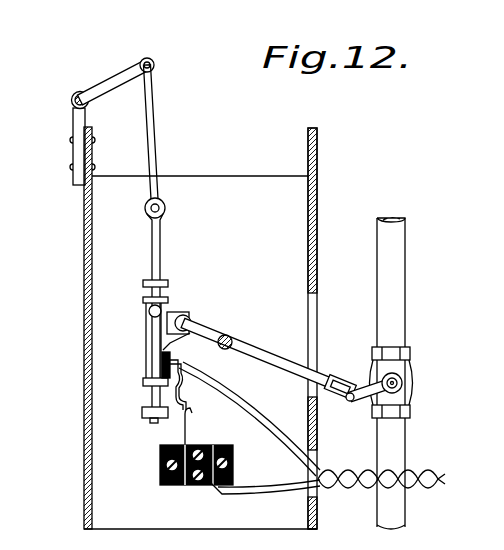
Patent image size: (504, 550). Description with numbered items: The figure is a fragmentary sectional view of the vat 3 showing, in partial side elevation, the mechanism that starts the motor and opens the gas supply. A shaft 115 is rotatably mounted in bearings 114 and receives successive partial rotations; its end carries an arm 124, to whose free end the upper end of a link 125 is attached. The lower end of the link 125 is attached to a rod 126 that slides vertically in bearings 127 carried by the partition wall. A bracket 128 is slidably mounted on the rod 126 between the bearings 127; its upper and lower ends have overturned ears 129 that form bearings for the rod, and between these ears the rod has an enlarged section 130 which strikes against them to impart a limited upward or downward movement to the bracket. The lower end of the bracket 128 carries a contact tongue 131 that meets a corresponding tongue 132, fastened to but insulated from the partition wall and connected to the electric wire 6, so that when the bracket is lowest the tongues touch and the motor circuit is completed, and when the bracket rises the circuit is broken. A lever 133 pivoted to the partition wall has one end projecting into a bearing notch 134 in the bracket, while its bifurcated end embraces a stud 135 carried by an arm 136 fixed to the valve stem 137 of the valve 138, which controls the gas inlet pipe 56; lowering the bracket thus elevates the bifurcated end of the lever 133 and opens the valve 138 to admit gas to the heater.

The vat 3 is at (316, 195).
The electric wire 6 is at (288, 470).
The gas inlet pipe 56 is at (406, 283).
The bearings 114 is at (71, 100).
The shaft 115 is at (75, 103).
The arm 124 is at (107, 80).
The link 125 is at (154, 147).
The rod 126 is at (158, 236).
The bearings 127 is at (168, 283).
The bracket 128 is at (146, 342).
The overturned ears 129 is at (168, 300).
The enlarged section 130 is at (149, 311).
The contact tongue 131 is at (193, 388).
The contact tongue 132 is at (187, 438).
The lever 133 is at (256, 352).
The bearing notch 134 is at (190, 319).
The stud 135 is at (350, 393).
The arm 136 is at (401, 397).
The valve stem 137 is at (403, 384).
The valve 138 is at (403, 372).